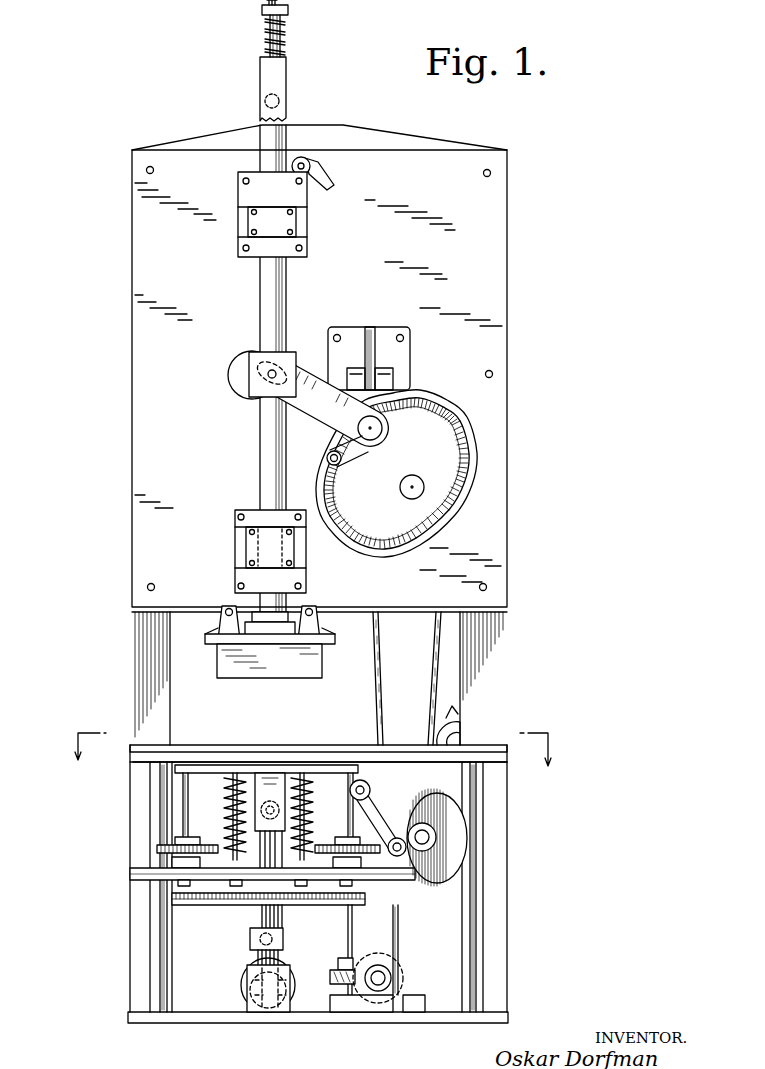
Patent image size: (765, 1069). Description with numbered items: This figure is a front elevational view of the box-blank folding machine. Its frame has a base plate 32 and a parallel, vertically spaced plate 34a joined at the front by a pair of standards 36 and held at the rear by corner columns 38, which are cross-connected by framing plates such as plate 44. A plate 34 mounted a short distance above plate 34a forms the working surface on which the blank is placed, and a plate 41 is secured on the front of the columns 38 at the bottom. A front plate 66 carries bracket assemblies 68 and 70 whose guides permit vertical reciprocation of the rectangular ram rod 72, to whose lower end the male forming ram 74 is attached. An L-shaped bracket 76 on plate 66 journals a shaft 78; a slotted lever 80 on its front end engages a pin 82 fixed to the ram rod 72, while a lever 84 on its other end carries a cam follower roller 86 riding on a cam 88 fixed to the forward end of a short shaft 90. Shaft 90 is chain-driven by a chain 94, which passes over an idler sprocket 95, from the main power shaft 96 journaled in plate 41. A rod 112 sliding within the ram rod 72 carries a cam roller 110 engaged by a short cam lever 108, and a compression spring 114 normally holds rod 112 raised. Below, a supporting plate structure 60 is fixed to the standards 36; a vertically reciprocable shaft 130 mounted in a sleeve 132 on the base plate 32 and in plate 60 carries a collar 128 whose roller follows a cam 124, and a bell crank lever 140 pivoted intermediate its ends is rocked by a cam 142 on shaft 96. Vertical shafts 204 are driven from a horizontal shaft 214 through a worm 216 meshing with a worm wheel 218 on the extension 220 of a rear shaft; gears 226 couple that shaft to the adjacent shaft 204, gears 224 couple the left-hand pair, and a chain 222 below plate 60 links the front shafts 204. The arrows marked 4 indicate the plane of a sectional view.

The rod 112 is at (288, 33).
The compression spring 114 is at (282, 50).
The cam roller 110 is at (280, 97).
The framing plate 44 is at (392, 136).
The cam lever 108 is at (334, 185).
The bracket assembly 68 is at (302, 228).
The ram rod 72 is at (280, 285).
The plate 66 is at (508, 278).
The L-shaped bracket 76 is at (403, 352).
The pin 82 is at (248, 395).
The lever 80 is at (336, 408).
The cam follower roller 86 is at (327, 455).
The shaft 78 is at (374, 432).
The lever 84 is at (358, 456).
The cam 88 is at (466, 452).
The shaft 90 is at (414, 499).
The bracket assembly 70 is at (240, 552).
The corner columns 38 is at (132, 668).
The male forming ram 74 is at (275, 678).
The chain 94 is at (381, 680).
The plate 34 is at (218, 745).
The idler sprocket 95 is at (445, 722).
The section line 4- 4 is at (308, 762).
The bell crank lever 140 is at (368, 786).
The vertical shafts 204 is at (184, 800).
The gears 224 is at (196, 840).
The plate 34a is at (495, 770).
The shaft 96 is at (436, 836).
The cam 142 is at (455, 858).
The supporting plate structure 60 is at (130, 876).
The plate 41 is at (495, 890).
The gears 226 is at (380, 856).
The shaft 130 is at (262, 912).
The chain 222 is at (298, 905).
The extension 220 is at (353, 928).
The collar 128 is at (250, 938).
The worm wheel 218 is at (332, 975).
The worm 216 is at (385, 953).
The horizontal shaft 214 is at (388, 976).
The standards 36 is at (168, 955).
The base plate 32 is at (210, 1023).
The sleeve 132 is at (262, 1012).
The cam 124 is at (290, 985).